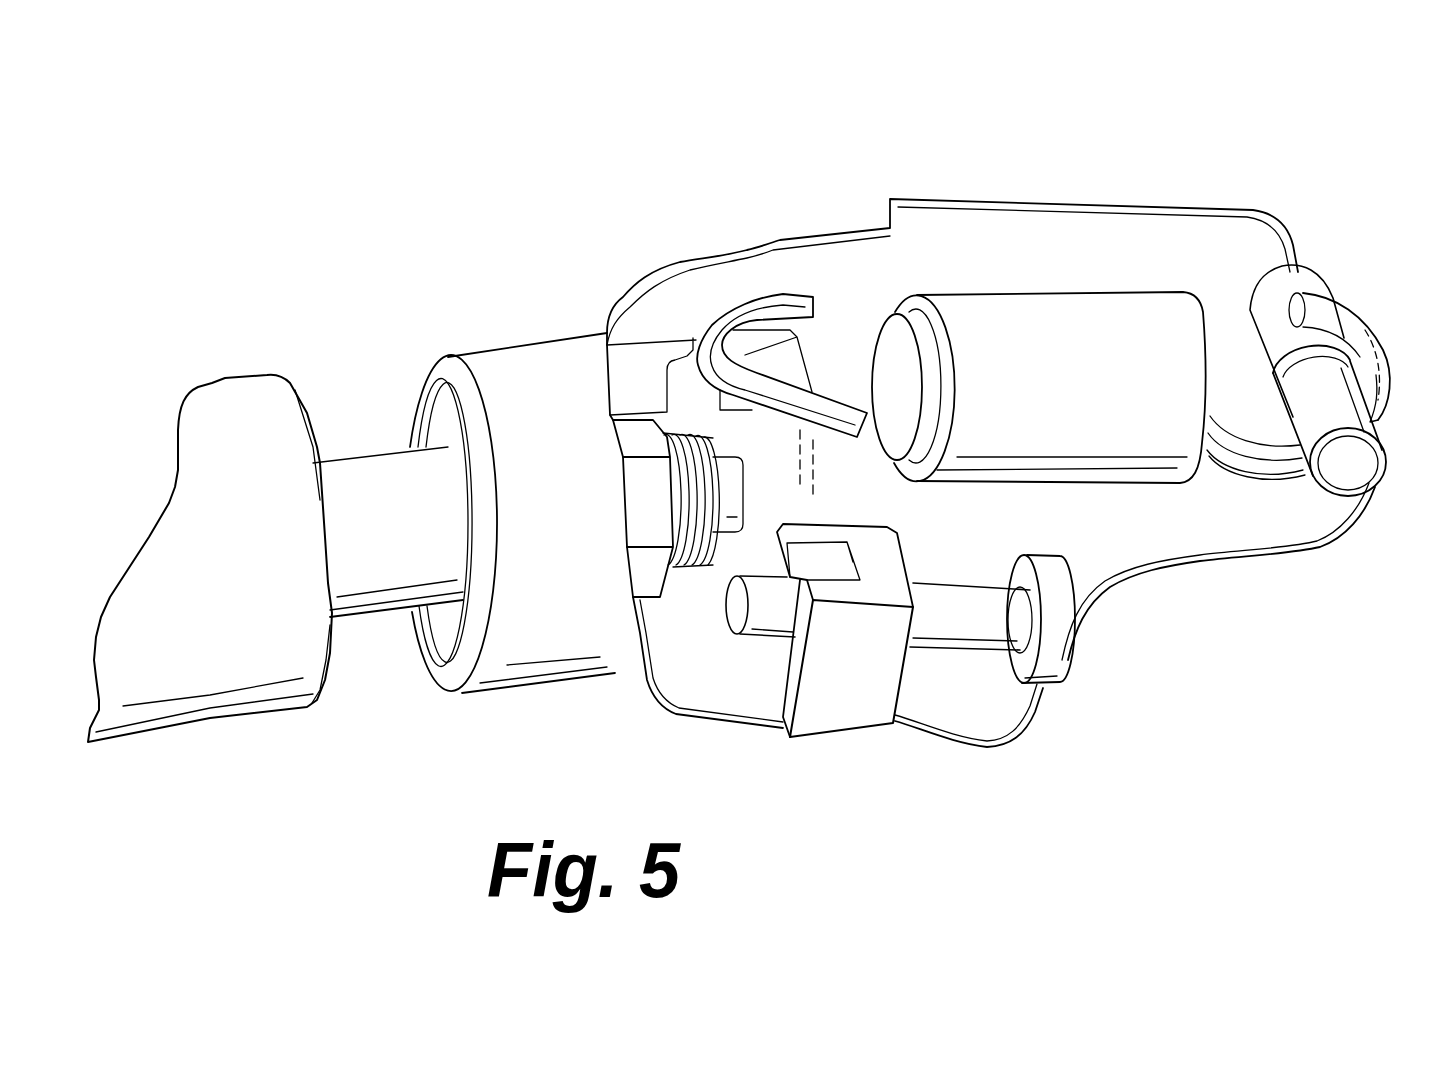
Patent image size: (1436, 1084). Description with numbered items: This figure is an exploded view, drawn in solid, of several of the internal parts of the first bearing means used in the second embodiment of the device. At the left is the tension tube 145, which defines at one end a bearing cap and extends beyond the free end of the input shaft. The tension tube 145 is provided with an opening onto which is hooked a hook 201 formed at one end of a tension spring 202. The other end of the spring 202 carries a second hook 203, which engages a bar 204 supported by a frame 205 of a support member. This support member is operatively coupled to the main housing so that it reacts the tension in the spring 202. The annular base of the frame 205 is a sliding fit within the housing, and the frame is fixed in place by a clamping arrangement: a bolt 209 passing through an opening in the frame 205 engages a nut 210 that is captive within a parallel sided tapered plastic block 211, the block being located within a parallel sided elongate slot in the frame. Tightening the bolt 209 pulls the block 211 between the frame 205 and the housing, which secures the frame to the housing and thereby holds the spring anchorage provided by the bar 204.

The tension tube 145 is at (540, 667).
The hook 201 is at (767, 308).
The tension spring 202 is at (1038, 302).
The hook 203 is at (1347, 323).
The bar 204 is at (1340, 463).
The frame 205 is at (1190, 575).
The bolt 209 is at (1032, 722).
The nut 210 is at (795, 667).
The tapered plastic block 211 is at (843, 722).